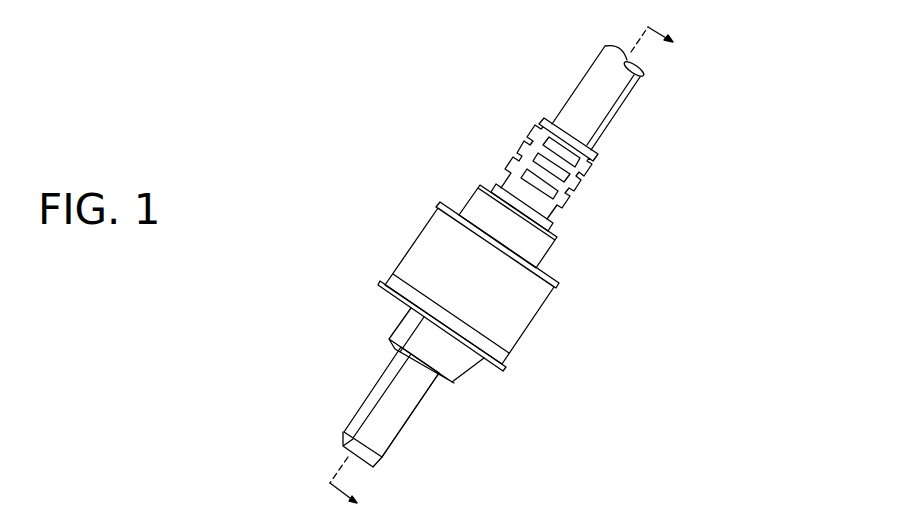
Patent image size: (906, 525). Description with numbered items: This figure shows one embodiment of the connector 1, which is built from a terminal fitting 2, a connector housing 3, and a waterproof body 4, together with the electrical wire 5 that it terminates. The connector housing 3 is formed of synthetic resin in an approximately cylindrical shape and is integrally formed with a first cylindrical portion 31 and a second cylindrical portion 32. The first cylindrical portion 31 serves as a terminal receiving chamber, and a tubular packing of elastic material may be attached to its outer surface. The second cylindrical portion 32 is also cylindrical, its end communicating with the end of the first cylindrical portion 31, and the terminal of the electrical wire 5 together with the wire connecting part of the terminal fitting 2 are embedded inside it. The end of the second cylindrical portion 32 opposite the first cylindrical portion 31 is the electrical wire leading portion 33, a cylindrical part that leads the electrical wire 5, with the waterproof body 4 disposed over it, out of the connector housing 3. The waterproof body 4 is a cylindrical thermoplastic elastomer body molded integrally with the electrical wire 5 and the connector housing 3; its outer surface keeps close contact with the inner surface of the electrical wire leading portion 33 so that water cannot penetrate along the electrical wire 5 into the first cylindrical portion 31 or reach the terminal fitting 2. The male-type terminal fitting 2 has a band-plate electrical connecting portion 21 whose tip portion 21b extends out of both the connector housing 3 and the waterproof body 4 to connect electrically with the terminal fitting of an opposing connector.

The connector 1 is at (411, 194).
The terminal fitting 2 is at (332, 448).
The electrical connecting portion 21 is at (351, 383).
The tip portion 21b is at (410, 425).
The connector housing 3 is at (559, 312).
The first cylindrical portion 31 is at (503, 368).
The second cylindrical portion 32 is at (543, 262).
The electrical wire leading portion 33 is at (466, 188).
The waterproof body 4 is at (599, 187).
The electrical wire 5 is at (639, 103).